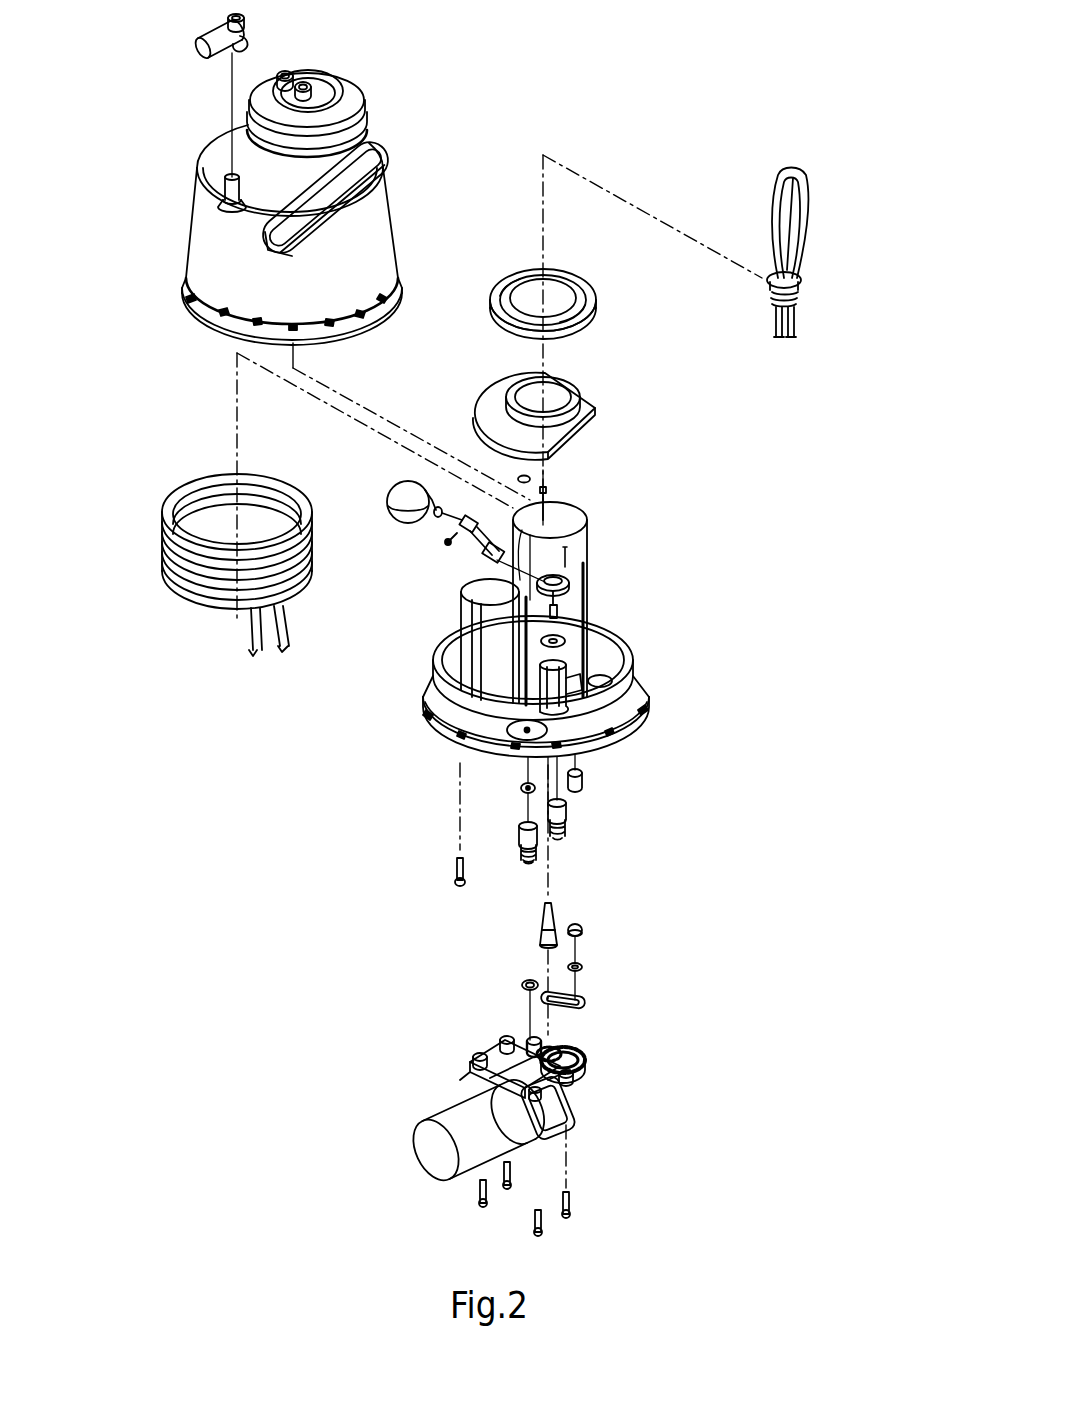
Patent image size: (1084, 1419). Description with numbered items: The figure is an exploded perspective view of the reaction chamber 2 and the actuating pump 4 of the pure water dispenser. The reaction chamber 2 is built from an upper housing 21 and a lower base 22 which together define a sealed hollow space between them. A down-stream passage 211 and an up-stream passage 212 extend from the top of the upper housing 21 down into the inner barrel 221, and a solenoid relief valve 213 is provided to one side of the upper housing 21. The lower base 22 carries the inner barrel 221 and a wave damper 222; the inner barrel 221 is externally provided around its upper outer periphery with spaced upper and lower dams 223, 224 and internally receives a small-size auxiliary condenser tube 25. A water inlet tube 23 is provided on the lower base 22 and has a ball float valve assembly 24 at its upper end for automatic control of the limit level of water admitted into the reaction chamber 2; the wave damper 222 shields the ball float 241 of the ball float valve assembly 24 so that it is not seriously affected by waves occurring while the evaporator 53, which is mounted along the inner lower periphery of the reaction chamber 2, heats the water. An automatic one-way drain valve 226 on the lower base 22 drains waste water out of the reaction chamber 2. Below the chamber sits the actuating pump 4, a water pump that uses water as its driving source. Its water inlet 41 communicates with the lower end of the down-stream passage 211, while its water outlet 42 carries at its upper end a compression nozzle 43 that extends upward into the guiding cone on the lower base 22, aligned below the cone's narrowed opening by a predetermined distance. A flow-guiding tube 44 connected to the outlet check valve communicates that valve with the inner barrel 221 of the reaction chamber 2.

The reaction chamber 2 is at (632, 463).
The upper housing 21 is at (387, 213).
The down-stream passage 211 is at (290, 72).
The up-stream passage 212 is at (318, 86).
The solenoid relief valve 213 is at (193, 43).
The lower base 22 is at (640, 705).
The inner barrel 221 is at (583, 540).
The wave damper 222 is at (458, 630).
The upper dam 223 is at (597, 300).
The lower dam 224 is at (597, 405).
The automatic one-way drain valve 226 is at (520, 832).
The water inlet tube 23 is at (562, 698).
The ball float valve assembly 24 is at (430, 548).
The ball float 241 is at (400, 492).
The auxiliary condenser tube 25 is at (785, 170).
The actuating pump 4 is at (589, 1107).
The water inlet 41 is at (527, 1040).
The water outlet 42 is at (585, 1052).
The compression nozzle 43 is at (560, 915).
The flow-guiding tube 44 is at (575, 1085).
The evaporator 53 is at (200, 478).